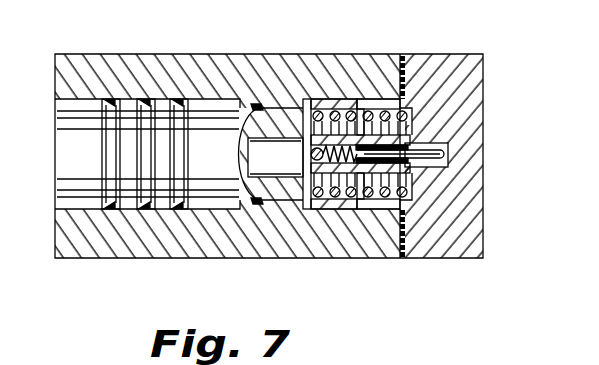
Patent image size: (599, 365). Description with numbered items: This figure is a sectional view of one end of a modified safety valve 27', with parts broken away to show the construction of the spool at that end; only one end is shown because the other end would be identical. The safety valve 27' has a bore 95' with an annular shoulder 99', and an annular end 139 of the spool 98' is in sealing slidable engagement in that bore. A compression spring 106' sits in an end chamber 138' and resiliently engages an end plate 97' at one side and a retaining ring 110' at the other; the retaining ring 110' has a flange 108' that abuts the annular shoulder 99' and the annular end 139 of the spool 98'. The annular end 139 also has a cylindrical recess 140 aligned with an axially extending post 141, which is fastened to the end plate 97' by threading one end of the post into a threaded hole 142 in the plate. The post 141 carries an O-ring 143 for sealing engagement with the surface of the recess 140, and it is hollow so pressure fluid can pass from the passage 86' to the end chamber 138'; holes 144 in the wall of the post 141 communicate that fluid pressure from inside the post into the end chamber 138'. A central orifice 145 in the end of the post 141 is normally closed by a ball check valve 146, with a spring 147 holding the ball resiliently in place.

The safety valve 27' is at (269, 133).
The bore 95' is at (158, 109).
The spool 98' is at (148, 201).
The annular shoulder 99' is at (245, 59).
The annular end 139 is at (268, 99).
The cylindrical recess 140 is at (240, 147).
The ball check valve 146 is at (300, 148).
The central orifice 145 is at (290, 204).
The O-ring 143 is at (313, 99).
The holes 144 is at (342, 110).
The end chamber 138' is at (389, 109).
The post 141 is at (414, 118).
The threaded hole 142 is at (414, 180).
The compression spring 106' is at (400, 218).
The passage 86' is at (438, 138).
The retaining ring 110' is at (344, 228).
The flange 108' is at (290, 220).
The spring 147 is at (322, 209).
The end plate 97' is at (441, 133).